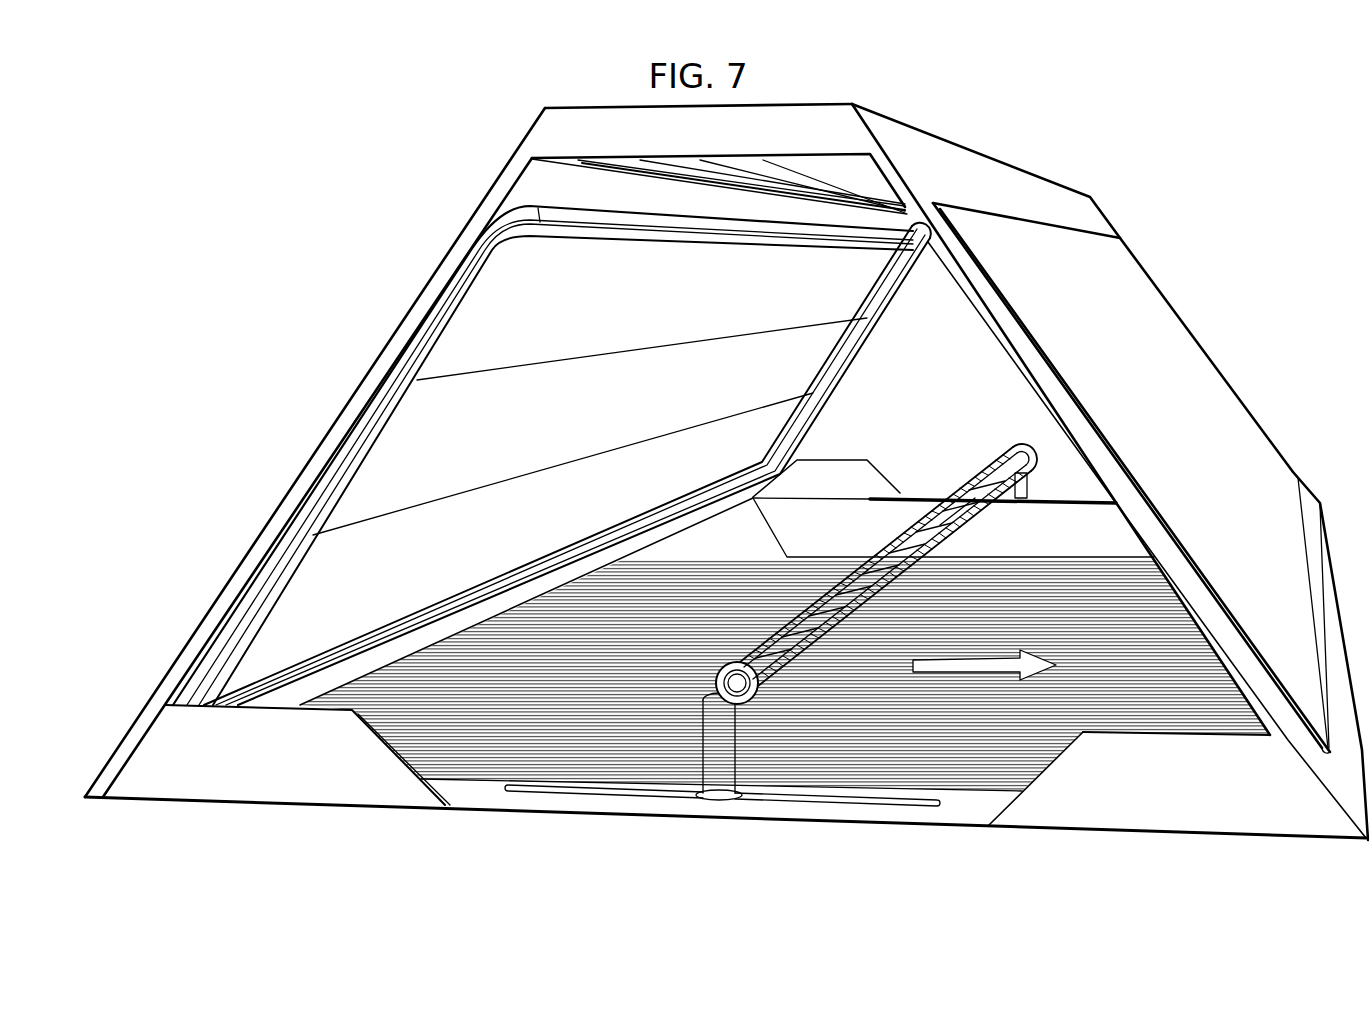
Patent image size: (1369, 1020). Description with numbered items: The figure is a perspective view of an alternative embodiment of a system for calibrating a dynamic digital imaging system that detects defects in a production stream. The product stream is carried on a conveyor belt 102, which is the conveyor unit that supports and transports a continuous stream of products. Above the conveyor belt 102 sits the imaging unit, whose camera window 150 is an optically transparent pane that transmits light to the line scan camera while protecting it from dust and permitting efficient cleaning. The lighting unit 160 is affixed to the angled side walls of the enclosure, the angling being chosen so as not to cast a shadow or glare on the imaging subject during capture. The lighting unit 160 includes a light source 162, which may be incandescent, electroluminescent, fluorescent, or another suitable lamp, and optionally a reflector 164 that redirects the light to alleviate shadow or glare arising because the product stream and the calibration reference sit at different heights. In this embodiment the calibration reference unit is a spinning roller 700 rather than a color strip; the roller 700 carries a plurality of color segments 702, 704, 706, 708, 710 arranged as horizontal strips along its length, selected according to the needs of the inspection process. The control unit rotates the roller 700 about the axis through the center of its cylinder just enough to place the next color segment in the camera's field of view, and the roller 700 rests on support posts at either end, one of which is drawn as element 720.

The conveyor belt 102 is at (1070, 578).
The camera window 150 is at (788, 167).
The lighting unit 160 is at (893, 331).
The light source 162 is at (651, 335).
The reflector 164 is at (482, 467).
The spinning roller 700 is at (854, 554).
The color segment 702 is at (877, 545).
The color segment 704 is at (917, 535).
The color segment 706 is at (960, 490).
The color segment 708 is at (997, 477).
The color segment 710 is at (967, 535).
The pivot post 720 is at (743, 772).